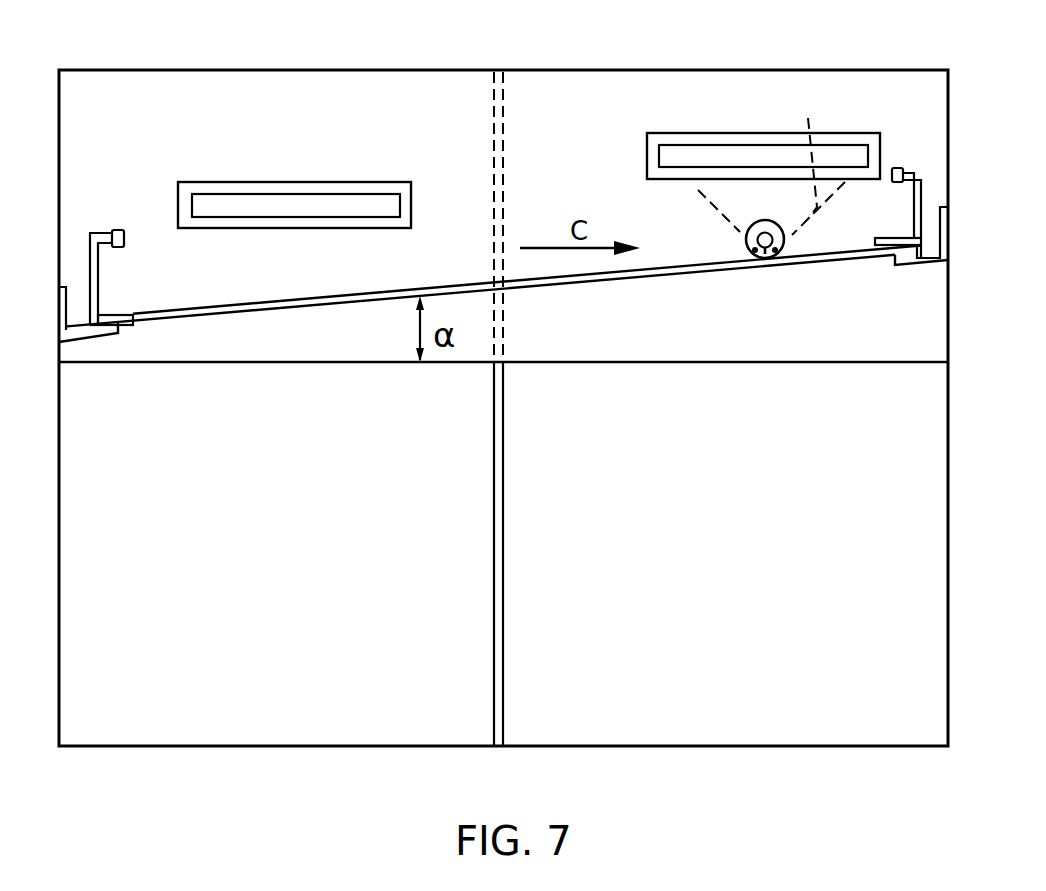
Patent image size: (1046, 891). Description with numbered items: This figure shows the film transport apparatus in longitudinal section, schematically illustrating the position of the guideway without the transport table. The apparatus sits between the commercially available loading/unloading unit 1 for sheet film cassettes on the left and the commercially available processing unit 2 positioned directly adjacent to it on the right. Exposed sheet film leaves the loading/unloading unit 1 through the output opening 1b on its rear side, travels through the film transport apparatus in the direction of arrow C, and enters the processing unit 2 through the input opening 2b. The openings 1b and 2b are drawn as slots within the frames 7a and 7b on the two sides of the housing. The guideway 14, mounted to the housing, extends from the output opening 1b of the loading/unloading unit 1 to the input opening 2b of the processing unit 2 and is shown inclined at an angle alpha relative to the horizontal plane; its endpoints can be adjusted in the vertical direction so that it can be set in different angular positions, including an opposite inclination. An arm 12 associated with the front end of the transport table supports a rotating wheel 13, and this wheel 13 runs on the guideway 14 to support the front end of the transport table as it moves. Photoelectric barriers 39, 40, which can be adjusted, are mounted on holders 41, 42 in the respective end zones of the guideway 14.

The loading/unloading unit 1 is at (405, 88).
The processing unit 2 is at (523, 88).
The output opening 1b is at (214, 205).
The input opening 2b is at (670, 158).
The first guide frame 7a is at (303, 183).
The second guide frame 7b is at (713, 134).
The arm 12 is at (817, 163).
The rotating wheel 13 is at (747, 227).
The guideway 14 is at (443, 290).
The photoelectric barrier 39 is at (897, 168).
The photoelectric barrier 40 is at (125, 230).
The holder 41 is at (88, 267).
The holder 42 is at (922, 175).